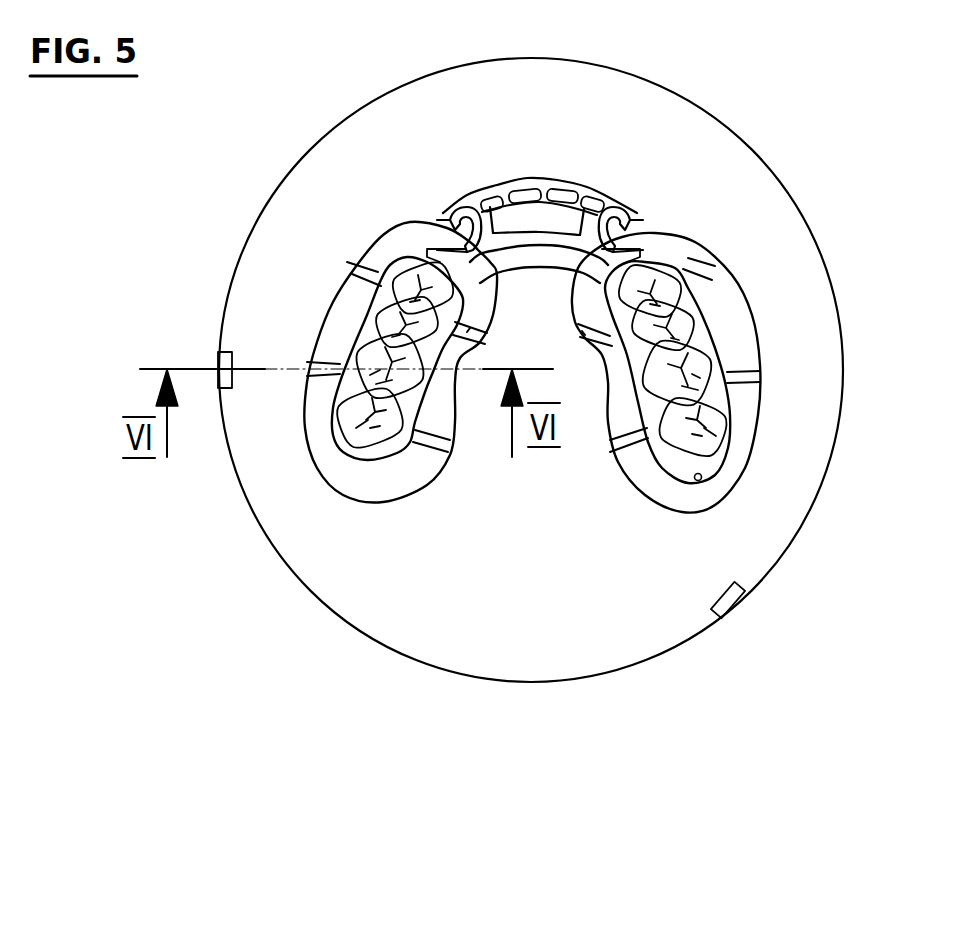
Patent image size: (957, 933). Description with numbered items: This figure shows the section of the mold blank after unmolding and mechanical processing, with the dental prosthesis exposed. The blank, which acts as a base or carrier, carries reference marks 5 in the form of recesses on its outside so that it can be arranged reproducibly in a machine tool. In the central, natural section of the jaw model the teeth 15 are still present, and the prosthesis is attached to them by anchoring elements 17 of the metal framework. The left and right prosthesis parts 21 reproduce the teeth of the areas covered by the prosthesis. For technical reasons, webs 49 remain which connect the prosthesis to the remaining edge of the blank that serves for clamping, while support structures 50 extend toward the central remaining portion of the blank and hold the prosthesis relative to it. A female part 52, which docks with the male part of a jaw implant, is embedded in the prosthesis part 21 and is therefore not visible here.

The reference marks 5 is at (222, 369).
The teeth 15 is at (489, 205).
The anchoring elements 17 is at (585, 235).
The prosthesis parts 21 is at (352, 440).
The webs 49 is at (313, 365).
The support structures 50 is at (467, 332).
The female part 52 is at (702, 477).